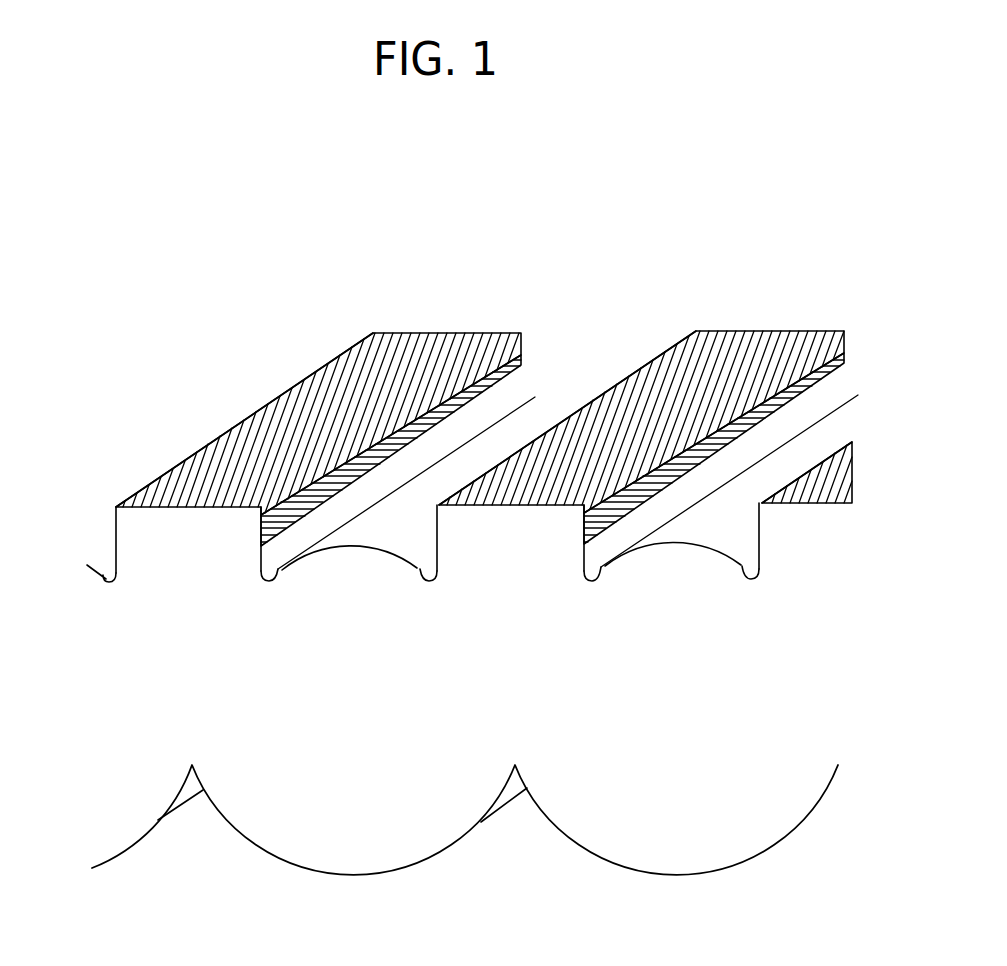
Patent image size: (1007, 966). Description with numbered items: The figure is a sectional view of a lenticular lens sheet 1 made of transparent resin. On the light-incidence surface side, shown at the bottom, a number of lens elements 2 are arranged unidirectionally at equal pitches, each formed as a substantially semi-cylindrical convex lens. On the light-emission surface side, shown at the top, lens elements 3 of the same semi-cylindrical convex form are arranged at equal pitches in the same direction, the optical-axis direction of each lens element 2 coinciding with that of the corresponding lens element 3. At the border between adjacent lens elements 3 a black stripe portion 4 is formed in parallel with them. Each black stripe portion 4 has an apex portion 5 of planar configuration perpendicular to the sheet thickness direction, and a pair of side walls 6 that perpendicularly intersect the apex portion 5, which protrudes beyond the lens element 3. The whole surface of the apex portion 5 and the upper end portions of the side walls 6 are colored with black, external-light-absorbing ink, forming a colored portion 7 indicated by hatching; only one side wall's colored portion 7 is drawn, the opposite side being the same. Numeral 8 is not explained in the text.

The lenticular lens sheet 1 is at (112, 308).
The lens element 2 is at (233, 838).
The lens element 3 is at (373, 545).
The black stripe portion 4 is at (266, 403).
The apex portion 5 is at (160, 500).
The side wall 6 is at (116, 527).
The colored portion 7 is at (455, 338).
The edge portion 8 is at (99, 572).